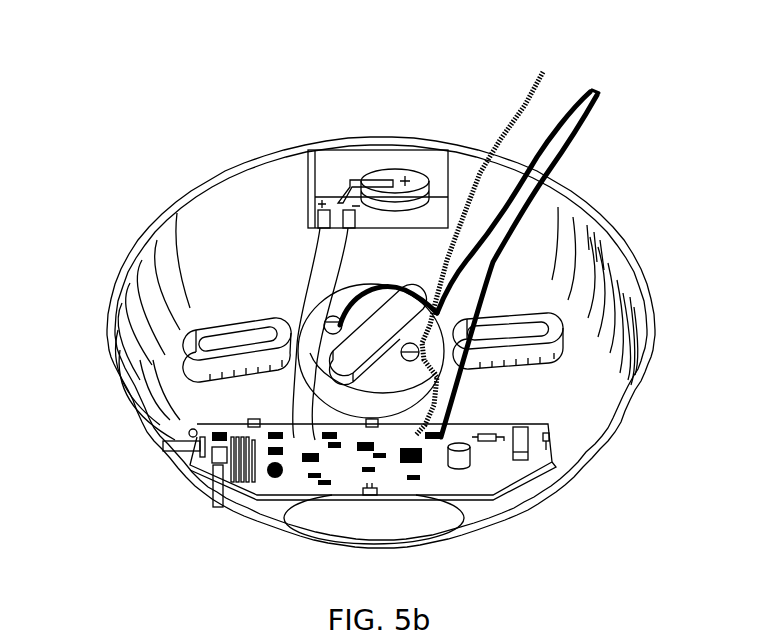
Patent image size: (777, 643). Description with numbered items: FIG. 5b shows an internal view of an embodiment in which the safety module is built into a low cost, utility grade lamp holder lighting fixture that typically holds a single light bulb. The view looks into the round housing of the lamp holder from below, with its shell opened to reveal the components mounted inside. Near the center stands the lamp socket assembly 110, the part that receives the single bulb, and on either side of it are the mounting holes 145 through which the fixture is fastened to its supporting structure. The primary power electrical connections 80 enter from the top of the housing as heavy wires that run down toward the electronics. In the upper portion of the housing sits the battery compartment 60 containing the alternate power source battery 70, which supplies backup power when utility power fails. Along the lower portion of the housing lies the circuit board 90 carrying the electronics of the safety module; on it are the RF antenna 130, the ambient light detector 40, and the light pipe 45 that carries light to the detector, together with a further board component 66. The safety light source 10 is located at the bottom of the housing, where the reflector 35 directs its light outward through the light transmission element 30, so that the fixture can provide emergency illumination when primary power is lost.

The safety light source 10 is at (368, 491).
The light transmission element 30 is at (440, 540).
The reflector 35 is at (423, 505).
The ambient light detector 40 is at (197, 440).
The light pipe 45 is at (163, 445).
The battery compartment 60 is at (320, 185).
The component 66 is at (218, 457).
The alternate power source battery 70 is at (378, 183).
The primary power electrical connections 80 is at (573, 60).
The circuit board 90 is at (222, 430).
The lamp socket assembly 110 is at (318, 342).
The RF antenna 130 is at (247, 470).
The mounting holes 145 is at (230, 345).